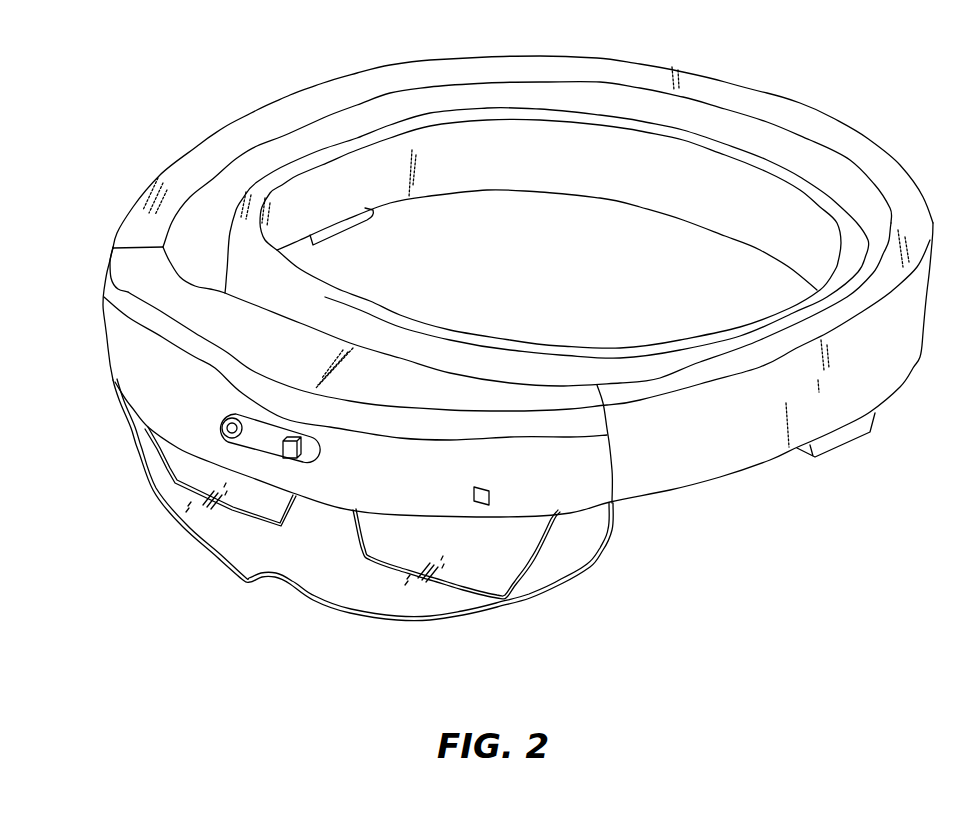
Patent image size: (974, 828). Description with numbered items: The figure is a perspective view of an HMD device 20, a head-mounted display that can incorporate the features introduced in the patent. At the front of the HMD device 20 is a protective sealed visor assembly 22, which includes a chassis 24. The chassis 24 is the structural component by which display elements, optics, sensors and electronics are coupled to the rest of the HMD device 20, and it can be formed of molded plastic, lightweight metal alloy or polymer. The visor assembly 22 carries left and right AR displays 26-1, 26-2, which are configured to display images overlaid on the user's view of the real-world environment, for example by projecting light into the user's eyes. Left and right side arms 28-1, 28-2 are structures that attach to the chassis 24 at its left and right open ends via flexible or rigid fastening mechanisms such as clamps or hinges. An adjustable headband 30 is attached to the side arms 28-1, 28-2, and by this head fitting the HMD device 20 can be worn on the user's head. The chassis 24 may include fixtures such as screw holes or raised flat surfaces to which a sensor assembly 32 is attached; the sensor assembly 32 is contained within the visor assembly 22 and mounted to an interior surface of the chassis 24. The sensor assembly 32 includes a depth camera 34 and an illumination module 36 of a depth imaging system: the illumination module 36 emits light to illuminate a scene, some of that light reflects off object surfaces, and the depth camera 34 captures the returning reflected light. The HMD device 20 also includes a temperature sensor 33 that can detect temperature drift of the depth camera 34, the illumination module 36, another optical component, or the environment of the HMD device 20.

The HMD device 20 is at (485, 366).
The visor assembly 22 is at (460, 620).
The chassis 24 is at (125, 292).
The left AR display 26-1 is at (537, 567).
The right AR display 26-2 is at (290, 520).
The left side arm 28-1 is at (720, 480).
The right side arm 28-2 is at (227, 126).
The adjustable headband 30 is at (338, 288).
The sensor assembly 32 is at (303, 462).
The temperature sensor 33 is at (490, 486).
The depth camera 34 is at (238, 413).
The illumination module 36 is at (303, 442).